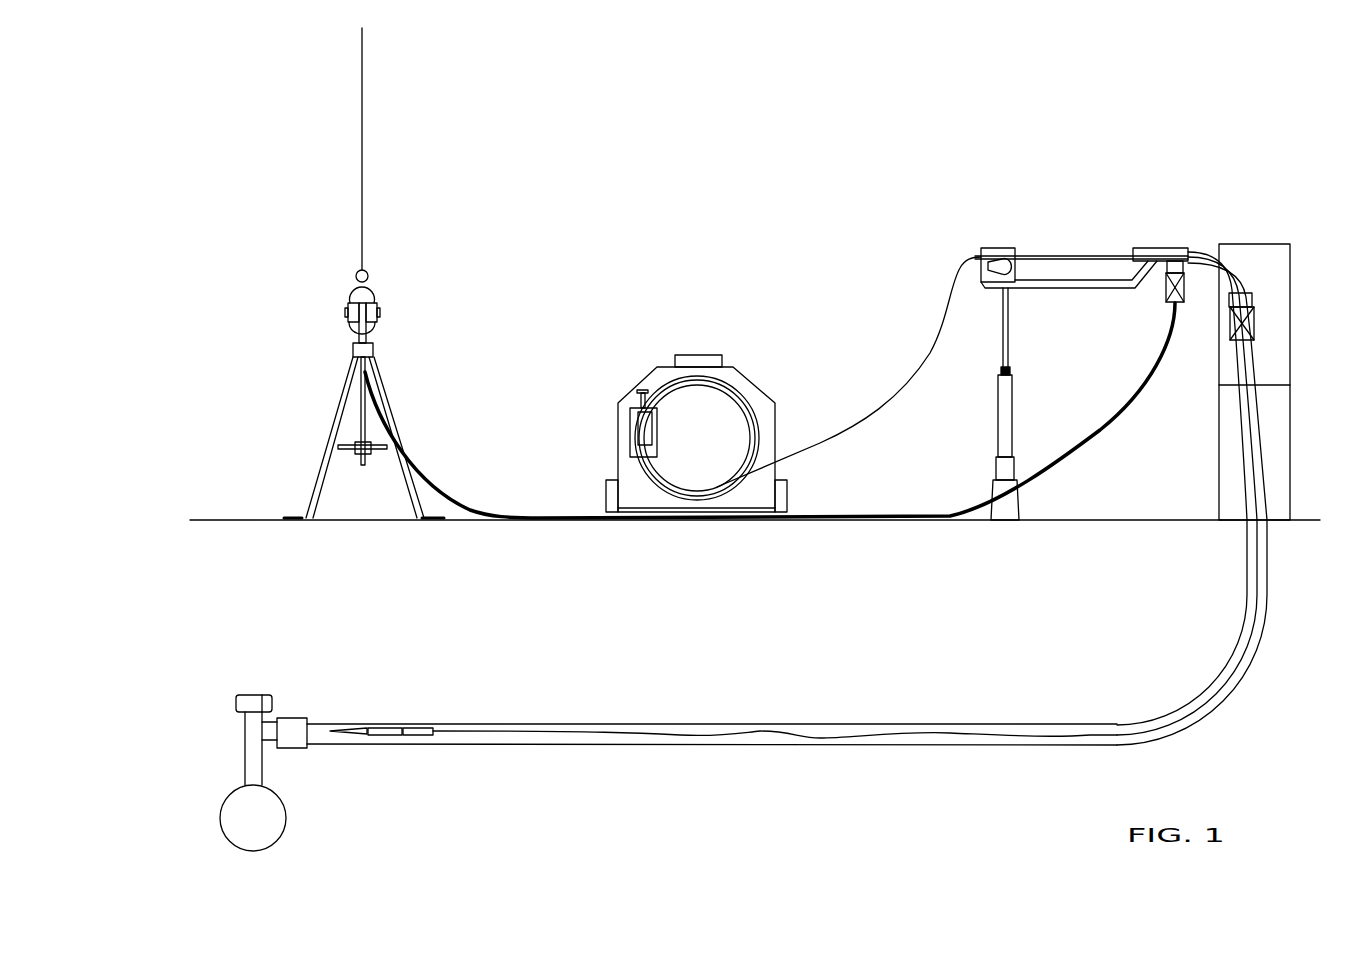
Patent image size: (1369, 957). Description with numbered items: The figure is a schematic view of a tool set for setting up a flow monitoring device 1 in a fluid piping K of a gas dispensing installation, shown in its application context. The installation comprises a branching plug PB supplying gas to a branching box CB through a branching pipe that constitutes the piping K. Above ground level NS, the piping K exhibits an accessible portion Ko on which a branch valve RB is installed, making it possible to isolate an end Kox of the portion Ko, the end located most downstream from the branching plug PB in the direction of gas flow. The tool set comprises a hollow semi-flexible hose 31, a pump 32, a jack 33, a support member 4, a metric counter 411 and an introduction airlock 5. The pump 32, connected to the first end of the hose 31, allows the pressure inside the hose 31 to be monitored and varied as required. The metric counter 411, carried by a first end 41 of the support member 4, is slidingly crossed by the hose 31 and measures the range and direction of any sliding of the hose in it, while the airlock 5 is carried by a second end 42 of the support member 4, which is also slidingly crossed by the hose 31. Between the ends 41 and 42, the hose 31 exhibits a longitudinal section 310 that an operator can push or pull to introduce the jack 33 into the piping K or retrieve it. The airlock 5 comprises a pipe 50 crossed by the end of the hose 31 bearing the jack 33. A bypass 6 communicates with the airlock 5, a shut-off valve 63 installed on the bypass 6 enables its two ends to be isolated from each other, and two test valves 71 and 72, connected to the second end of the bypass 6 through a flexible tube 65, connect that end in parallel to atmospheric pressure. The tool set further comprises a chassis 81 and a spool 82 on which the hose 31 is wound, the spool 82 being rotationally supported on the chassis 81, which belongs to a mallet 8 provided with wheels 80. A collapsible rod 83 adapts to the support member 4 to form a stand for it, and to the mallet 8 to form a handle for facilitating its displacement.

The flow monitoring device 1 is at (360, 730).
The hollow semi-flexible hose 31 is at (848, 433).
The jack 33 is at (418, 731).
The support member 4 is at (1055, 289).
The first end of the support member 41 is at (990, 288).
The metric counter 411 is at (983, 247).
The longitudinal section of the hose 310 is at (1045, 255).
The second end of the support member 42 is at (1133, 265).
The introduction airlock 5 is at (1136, 260).
The pipe of the airlock 50 is at (1230, 262).
The bypass 6 is at (1146, 292).
The shut-off valve 63 is at (1185, 302).
The flexible tube 65 is at (455, 493).
The test valve 71 is at (335, 305).
The test valve 72 is at (395, 297).
The mallet 8 is at (666, 379).
The wheels 80 is at (606, 495).
The chassis 81 is at (755, 378).
The spool 82 is at (667, 397).
The collapsible rod 83 is at (1000, 413).
The pump 32 is at (630, 420).
The ground level NS is at (227, 518).
The branching plug PB is at (226, 772).
The branching box CB is at (1290, 250).
The end of the accessible portion Kox is at (1253, 300).
The branch valve RB is at (1257, 325).
The accessible portion of the piping Ko is at (1268, 460).
The fluid piping K is at (1085, 715).